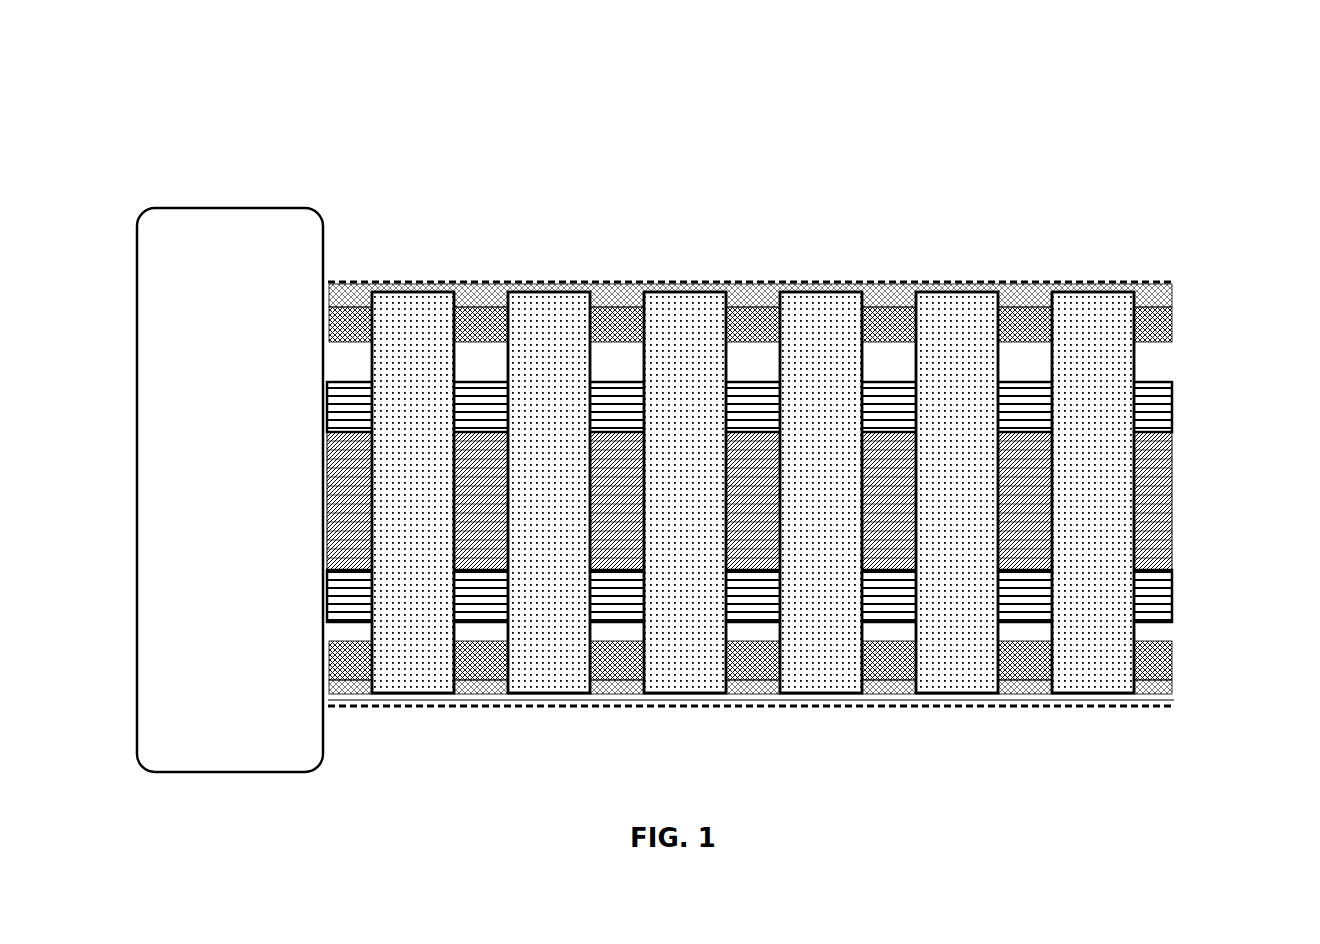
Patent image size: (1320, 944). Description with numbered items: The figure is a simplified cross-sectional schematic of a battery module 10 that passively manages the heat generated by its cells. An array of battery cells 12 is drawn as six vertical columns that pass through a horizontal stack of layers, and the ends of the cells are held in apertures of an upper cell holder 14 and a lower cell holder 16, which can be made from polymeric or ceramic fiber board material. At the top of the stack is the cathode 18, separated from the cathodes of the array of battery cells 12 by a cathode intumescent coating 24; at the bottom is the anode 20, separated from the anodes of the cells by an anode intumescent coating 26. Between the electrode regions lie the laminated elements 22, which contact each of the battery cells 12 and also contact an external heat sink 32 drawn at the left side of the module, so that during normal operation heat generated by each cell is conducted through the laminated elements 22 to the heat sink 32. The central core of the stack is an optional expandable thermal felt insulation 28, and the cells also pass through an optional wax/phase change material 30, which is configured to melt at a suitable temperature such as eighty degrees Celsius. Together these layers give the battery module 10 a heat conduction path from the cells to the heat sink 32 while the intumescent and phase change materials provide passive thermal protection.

The battery module 10 is at (1008, 132).
The array of battery cells 12 is at (753, 436).
The upper cell holder 14 is at (1160, 325).
The lower cell holder 16 is at (479, 667).
The cathode 18 is at (975, 275).
The anode 20 is at (1176, 703).
The laminated elements 22 is at (1172, 405).
The cathode intumescent coating 24 is at (1032, 297).
The anode intumescent coating 26 is at (1148, 688).
The expandable thermal felt insulation 28 is at (1160, 500).
The wax/phase change material 30 is at (755, 357).
The heat sink 32 is at (279, 517).